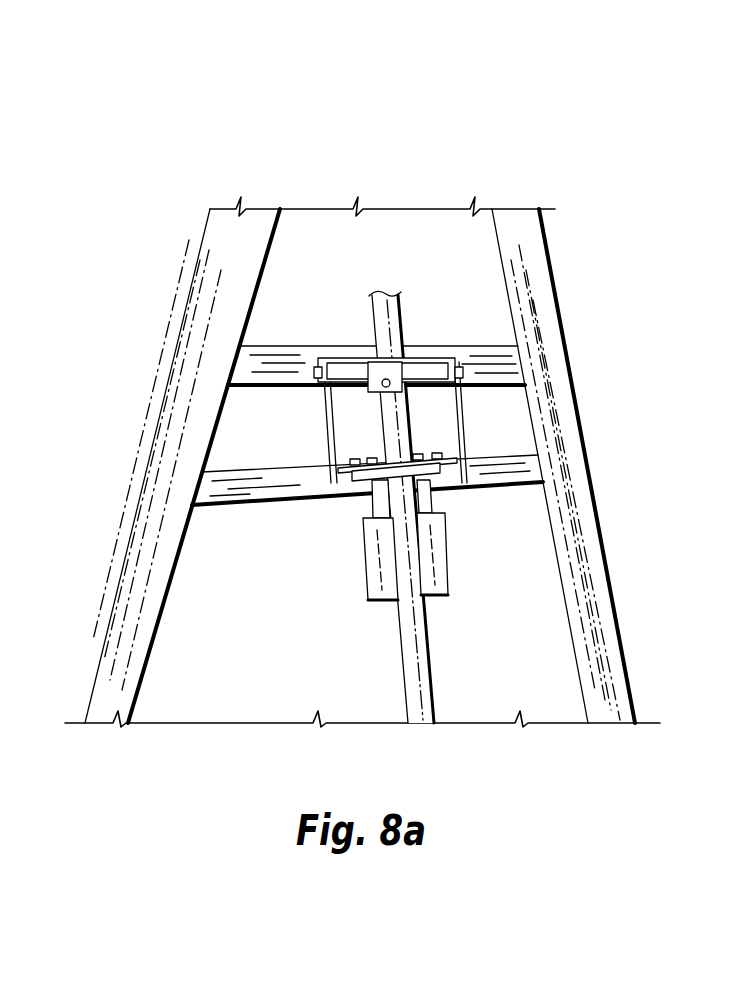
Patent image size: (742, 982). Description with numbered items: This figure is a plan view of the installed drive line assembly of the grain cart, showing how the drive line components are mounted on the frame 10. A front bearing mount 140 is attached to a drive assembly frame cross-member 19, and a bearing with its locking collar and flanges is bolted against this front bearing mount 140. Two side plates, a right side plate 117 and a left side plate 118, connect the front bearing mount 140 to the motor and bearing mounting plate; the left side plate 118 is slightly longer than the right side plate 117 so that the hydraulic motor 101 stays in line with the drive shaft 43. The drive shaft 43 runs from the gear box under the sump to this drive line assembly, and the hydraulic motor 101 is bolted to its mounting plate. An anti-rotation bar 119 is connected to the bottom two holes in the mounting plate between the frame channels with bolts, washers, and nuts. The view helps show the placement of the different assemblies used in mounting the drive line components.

The frame 10 is at (240, 260).
The drive assembly frame cross-member 19 is at (482, 360).
The anti-rotation bar 119 is at (257, 497).
The drive shaft 43 is at (410, 641).
The hydraulic motor 101 is at (428, 573).
The right side plate 117 is at (463, 420).
The left side plate 118 is at (328, 425).
The front bearing mount 140 is at (343, 357).